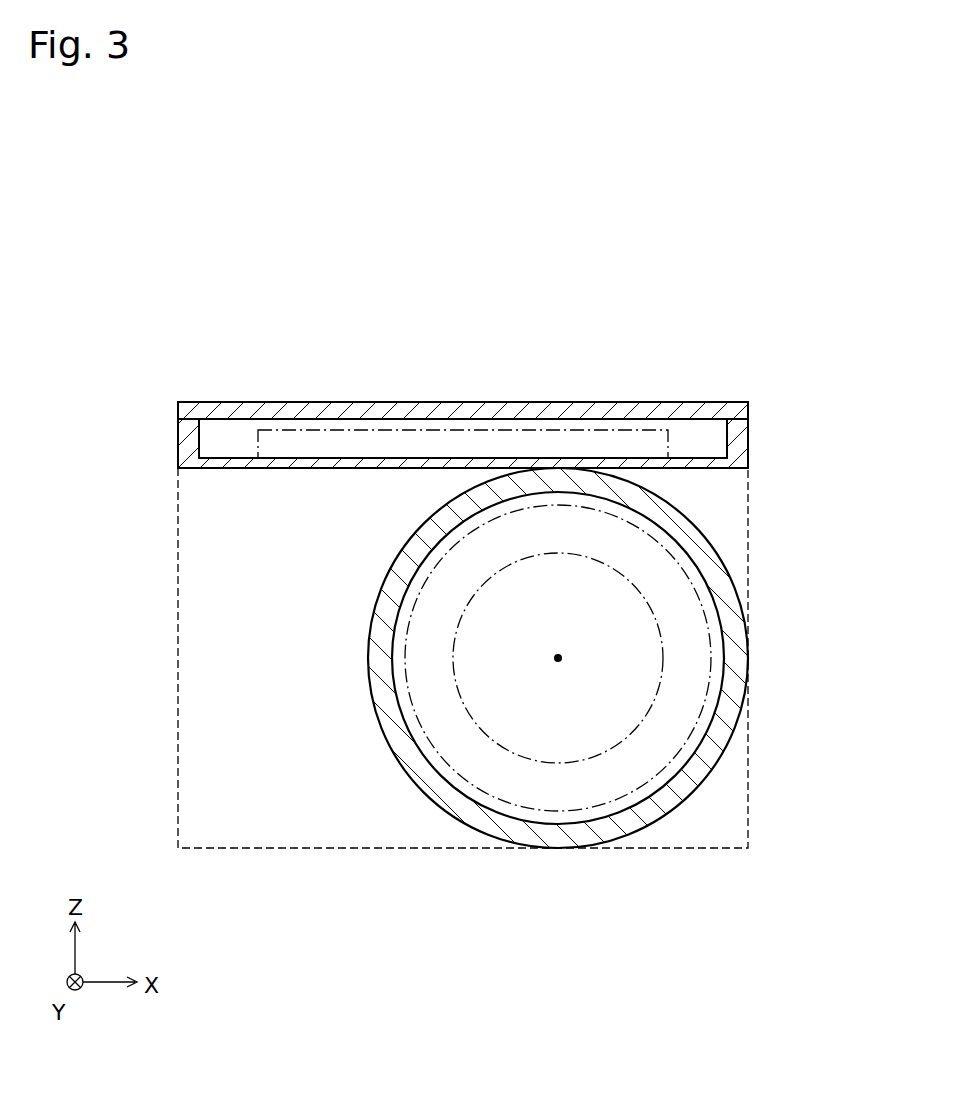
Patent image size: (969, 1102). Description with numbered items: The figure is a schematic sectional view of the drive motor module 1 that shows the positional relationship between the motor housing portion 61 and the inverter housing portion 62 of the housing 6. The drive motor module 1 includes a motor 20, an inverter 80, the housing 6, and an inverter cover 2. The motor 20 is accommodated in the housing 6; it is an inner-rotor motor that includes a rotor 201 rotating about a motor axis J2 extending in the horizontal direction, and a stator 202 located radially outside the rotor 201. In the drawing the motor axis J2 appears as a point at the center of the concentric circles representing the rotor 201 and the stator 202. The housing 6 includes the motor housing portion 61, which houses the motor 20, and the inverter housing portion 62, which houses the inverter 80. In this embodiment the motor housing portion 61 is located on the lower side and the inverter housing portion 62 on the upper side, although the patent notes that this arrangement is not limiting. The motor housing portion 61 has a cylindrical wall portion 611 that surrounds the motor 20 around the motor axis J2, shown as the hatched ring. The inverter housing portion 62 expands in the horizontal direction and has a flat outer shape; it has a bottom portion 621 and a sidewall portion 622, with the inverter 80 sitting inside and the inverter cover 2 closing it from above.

The drive motor module 1 is at (775, 348).
The inverter cover 2 is at (277, 400).
The inverter 80 is at (368, 430).
The inverter housing portion 62 is at (437, 450).
The sidewall portion 622 is at (182, 442).
The bottom portion 621 is at (225, 463).
The housing 6 is at (748, 505).
The motor housing portion 61 is at (484, 658).
The cylindrical wall portion 611 is at (735, 610).
The motor axis J2 is at (558, 658).
The motor 20 is at (558, 733).
The rotor 201 is at (542, 763).
The stator 202 is at (495, 921).